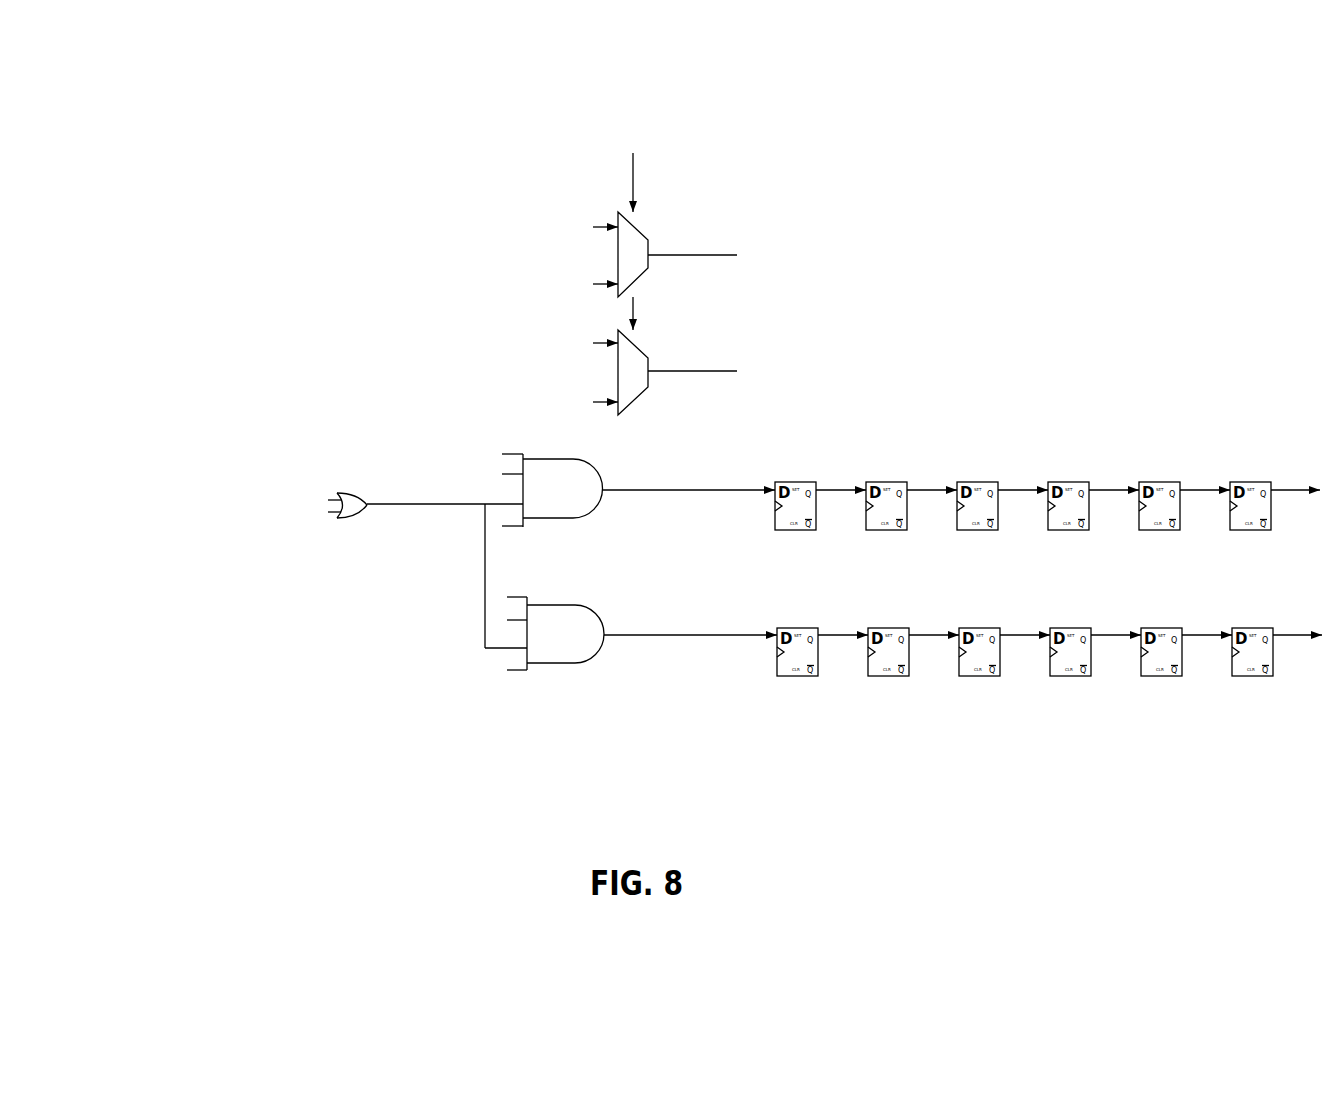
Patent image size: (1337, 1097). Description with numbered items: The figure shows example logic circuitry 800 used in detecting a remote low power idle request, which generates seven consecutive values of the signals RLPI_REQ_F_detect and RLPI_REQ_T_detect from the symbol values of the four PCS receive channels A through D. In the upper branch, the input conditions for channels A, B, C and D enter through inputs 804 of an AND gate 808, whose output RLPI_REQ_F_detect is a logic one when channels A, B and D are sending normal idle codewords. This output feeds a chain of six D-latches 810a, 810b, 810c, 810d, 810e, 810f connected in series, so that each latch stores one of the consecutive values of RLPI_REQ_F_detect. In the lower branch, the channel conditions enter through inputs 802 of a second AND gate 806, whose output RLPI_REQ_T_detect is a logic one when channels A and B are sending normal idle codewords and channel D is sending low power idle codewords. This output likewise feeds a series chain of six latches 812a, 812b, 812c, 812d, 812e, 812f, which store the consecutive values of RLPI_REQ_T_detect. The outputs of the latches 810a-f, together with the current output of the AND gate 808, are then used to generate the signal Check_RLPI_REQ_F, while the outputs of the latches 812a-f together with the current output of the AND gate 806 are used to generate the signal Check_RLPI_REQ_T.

The example logic circuitry 800 is at (1306, 65).
The AND gate inputs (RLPI_REQ_T detect) 802 is at (512, 670).
The AND gate inputs (RLPI_REQ_F detect) 804 is at (512, 527).
The AND gate 806 is at (572, 663).
The AND gate 808 is at (570, 518).
The D-latch 810a is at (780, 482).
The D-latch 810b is at (871, 482).
The D-latch 810c is at (962, 482).
The D-latch 810d is at (1053, 482).
The D-latch 810e is at (1144, 482).
The D-latch 810f is at (1235, 482).
The latch 812a is at (783, 676).
The latch 812b is at (874, 676).
The latch 812c is at (965, 676).
The latch 812d is at (1056, 676).
The latch 812e is at (1147, 676).
The latch 812f is at (1238, 676).